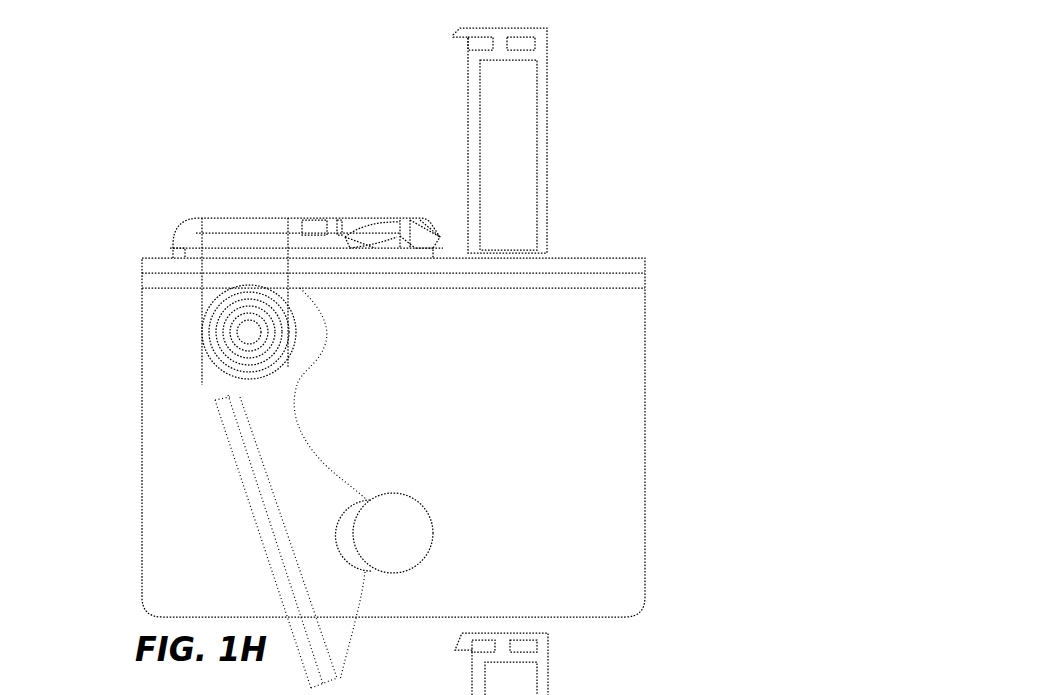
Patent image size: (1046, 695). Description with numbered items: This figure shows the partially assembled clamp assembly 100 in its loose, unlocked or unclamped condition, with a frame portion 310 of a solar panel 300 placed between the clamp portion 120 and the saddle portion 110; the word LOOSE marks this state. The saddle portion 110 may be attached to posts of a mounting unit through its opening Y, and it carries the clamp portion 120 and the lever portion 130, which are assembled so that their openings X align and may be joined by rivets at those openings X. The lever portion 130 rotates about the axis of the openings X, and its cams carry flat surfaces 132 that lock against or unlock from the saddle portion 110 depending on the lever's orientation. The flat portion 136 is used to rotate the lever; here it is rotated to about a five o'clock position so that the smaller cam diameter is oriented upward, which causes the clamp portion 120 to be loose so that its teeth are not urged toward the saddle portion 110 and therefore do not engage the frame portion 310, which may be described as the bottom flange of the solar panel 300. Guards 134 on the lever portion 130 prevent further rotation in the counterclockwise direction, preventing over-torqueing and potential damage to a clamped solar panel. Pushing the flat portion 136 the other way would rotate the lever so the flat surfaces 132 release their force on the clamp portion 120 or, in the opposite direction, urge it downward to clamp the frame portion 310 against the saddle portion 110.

The clamp assembly 100 is at (639, 228).
The saddle portion 110 is at (632, 548).
The clamp portion 120 is at (285, 208).
The lever portion 130 is at (298, 554).
The flat surfaces 132 is at (268, 268).
The guards 134 is at (317, 470).
The flat portion 136 is at (327, 678).
The solar panel 300 is at (546, 126).
The frame portion 310 is at (458, 244).
The openings X is at (246, 332).
The opening Y is at (393, 535).
The loose state LOOSE is at (404, 243).